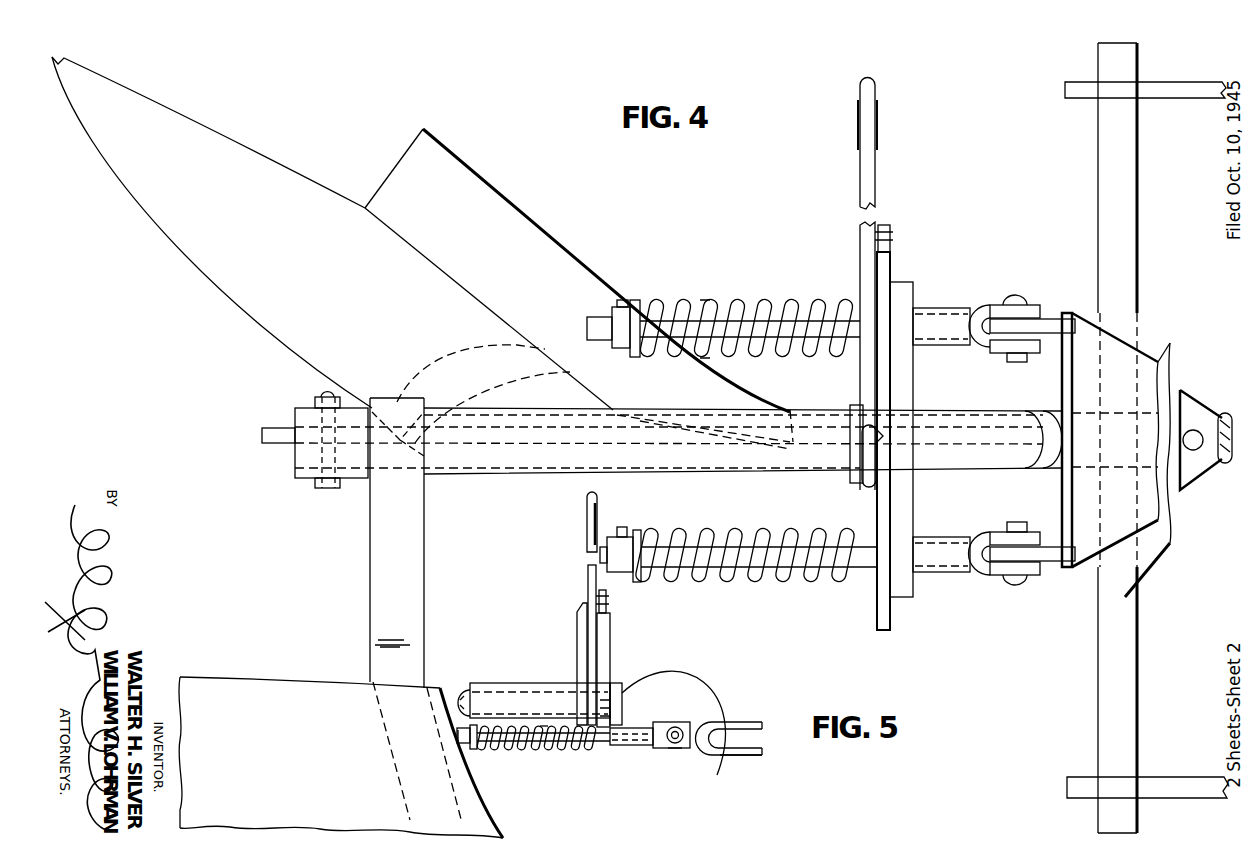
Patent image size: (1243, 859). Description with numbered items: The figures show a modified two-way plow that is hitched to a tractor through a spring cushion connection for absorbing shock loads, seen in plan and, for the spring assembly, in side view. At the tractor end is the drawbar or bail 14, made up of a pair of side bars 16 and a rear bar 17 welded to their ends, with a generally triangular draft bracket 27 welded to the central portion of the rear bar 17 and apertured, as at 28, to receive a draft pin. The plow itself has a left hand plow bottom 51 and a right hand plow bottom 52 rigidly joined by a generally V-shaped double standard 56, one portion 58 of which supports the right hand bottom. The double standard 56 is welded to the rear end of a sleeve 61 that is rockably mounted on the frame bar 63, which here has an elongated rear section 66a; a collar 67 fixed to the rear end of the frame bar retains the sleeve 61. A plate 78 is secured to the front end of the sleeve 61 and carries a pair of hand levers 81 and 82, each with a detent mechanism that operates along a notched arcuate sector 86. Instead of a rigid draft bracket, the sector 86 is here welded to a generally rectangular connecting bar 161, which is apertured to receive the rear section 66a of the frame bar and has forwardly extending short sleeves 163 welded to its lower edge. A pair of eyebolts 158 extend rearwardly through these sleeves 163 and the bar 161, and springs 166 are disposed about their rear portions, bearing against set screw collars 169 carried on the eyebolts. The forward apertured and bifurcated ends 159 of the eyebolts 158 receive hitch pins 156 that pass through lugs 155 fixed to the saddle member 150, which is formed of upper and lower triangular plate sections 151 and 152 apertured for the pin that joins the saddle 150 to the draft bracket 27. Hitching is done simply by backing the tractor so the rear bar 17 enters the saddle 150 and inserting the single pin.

In FIG. 4, the tractor drawbar 14 is at (1097, 729).
In FIG. 4, the side bars 16 is at (1199, 92).
In FIG. 4, the rear bar 17 is at (1118, 644).
In FIG. 4, the draft bracket 27 is at (1180, 400).
In FIG. 4, the aperture 28 is at (1193, 430).
In FIG. 4, the left hand plow bottom 51 is at (284, 188).
In FIG. 4, the right hand plow bottom 52 is at (281, 677).
In FIG. 4, the double plow bottom standard 56 is at (366, 528).
In FIG. 4, the portion of the double standard 58 is at (408, 540).
In FIG. 4, the sleeve 61 is at (515, 410).
In FIG. 5, the sleeve 61 is at (516, 683).
In FIG. 5, the frame bar 63 is at (710, 783).
In FIG. 4, the elongated rear section 66a is at (946, 420).
In FIG. 5, the elongated rear section 66a is at (462, 690).
In FIG. 4, the collar 67 is at (307, 478).
In FIG. 5, the plate 78 is at (583, 628).
In FIG. 4, the hand lever 81 is at (860, 442).
In FIG. 5, the hand lever 81 is at (585, 576).
In FIG. 4, the hand lever 82 is at (868, 178).
In FIG. 4, the sector 86 is at (895, 500).
In FIG. 5, the sector 86 is at (613, 644).
In FIG. 4, the saddle member 150 is at (1105, 325).
In FIG. 5, the saddle member 150 is at (725, 718).
In FIG. 4, the upper triangular section 151 is at (1125, 360).
In FIG. 5, the upper triangular section 151 is at (742, 723).
In FIG. 5, the lower triangular section 152 is at (743, 757).
In FIG. 4, the lugs 155 is at (1010, 325).
In FIG. 5, the lugs 155 is at (688, 728).
In FIG. 4, the hitch pins 156 is at (1012, 357).
In FIG. 5, the hitch pins 156 is at (672, 749).
In FIG. 4, the eyebolts 158 is at (768, 307).
In FIG. 5, the eyebolts 158 is at (523, 745).
In FIG. 4, the bifurcated ends 159 is at (990, 310).
In FIG. 4, the connecting bar 161 is at (902, 290).
In FIG. 5, the connecting bar 161 is at (615, 683).
In FIG. 4, the short sleeves 163 is at (940, 316).
In FIG. 5, the short sleeves 163 is at (633, 735).
In FIG. 4, the springs 166 is at (712, 306).
In FIG. 5, the springs 166 is at (543, 746).
In FIG. 4, the set screw collars 169 is at (618, 323).
In FIG. 5, the set screw collars 169 is at (468, 745).